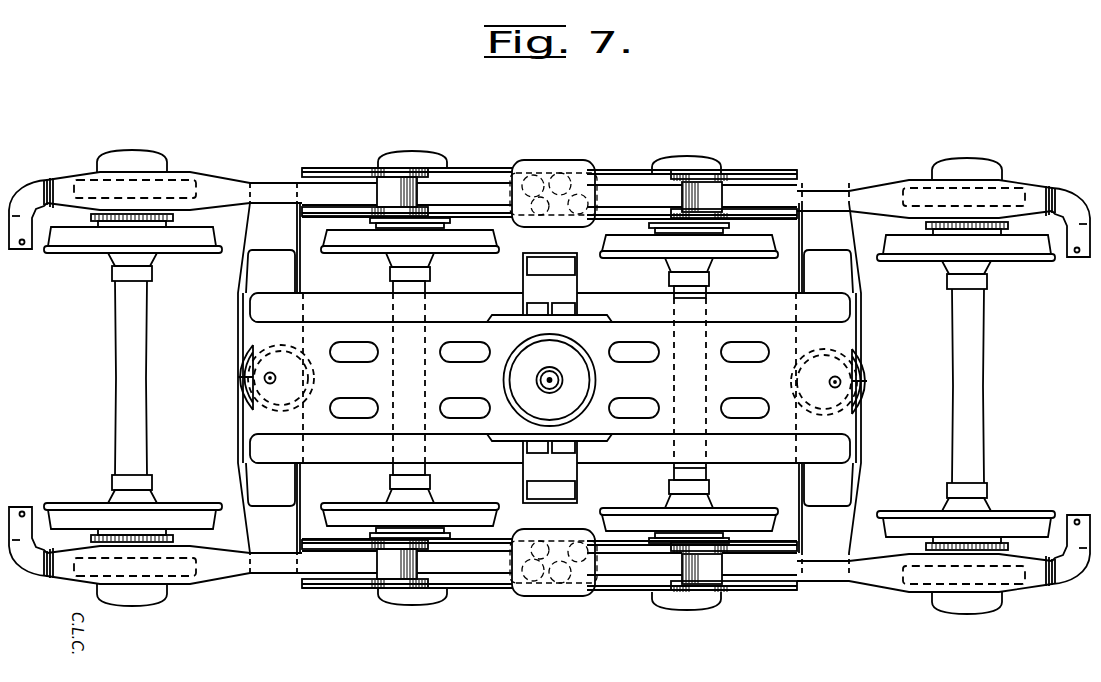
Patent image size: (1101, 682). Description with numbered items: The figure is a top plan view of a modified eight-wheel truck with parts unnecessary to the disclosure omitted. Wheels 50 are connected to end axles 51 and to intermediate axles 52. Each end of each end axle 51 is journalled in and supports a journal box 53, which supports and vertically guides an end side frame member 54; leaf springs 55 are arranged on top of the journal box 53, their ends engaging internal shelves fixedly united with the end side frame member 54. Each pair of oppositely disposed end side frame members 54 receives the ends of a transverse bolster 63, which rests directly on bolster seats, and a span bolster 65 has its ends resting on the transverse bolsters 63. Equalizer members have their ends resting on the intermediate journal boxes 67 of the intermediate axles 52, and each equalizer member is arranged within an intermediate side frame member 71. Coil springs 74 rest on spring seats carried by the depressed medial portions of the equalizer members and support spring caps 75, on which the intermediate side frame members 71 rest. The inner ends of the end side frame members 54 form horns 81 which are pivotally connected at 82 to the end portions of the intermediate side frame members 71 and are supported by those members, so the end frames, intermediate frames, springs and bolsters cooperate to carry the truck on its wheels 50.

The wheels 50 is at (92, 240).
The end axles 51 is at (138, 377).
The intermediate axles 52 is at (422, 292).
The journal box 53 is at (126, 151).
The end side frame member 54 is at (219, 184).
The leaf springs 55 is at (183, 192).
The transverse bolster 63 is at (280, 522).
The span bolster 65 is at (850, 306).
The intermediate journal box 67 is at (430, 603).
The intermediate side frame member 71 is at (482, 184).
The coil springs 74 is at (598, 170).
The spring caps 75 is at (553, 161).
The horns 81 is at (388, 194).
The pivotal connection 82 is at (409, 162).